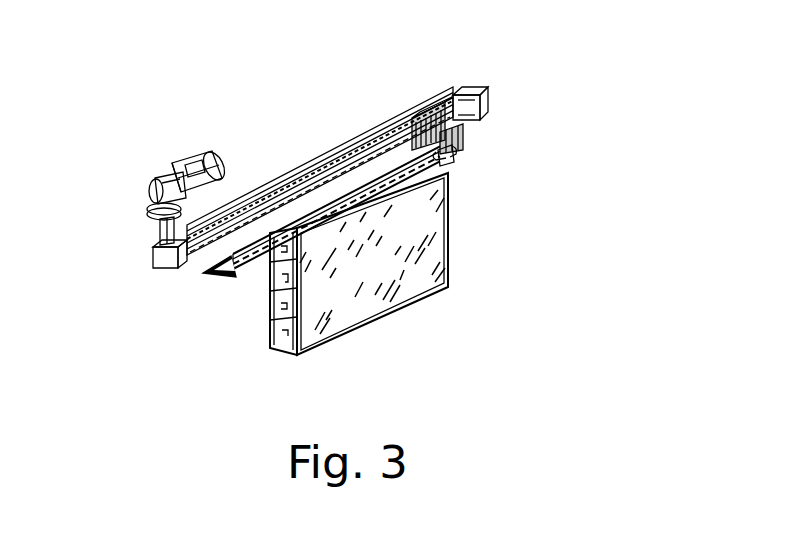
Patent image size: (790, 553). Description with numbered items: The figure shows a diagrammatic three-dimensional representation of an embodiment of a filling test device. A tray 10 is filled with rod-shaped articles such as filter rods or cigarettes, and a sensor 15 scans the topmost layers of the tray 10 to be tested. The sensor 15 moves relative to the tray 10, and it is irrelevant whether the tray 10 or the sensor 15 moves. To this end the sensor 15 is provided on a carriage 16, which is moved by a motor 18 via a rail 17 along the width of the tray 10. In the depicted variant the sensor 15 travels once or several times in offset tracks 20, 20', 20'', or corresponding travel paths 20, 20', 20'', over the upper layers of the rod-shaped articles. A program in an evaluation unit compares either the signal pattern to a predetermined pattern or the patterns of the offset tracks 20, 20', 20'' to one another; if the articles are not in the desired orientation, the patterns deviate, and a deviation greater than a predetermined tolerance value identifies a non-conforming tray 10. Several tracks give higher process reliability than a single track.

The tray 10 is at (450, 220).
The sensor 15 is at (470, 135).
The carriage 16 is at (428, 110).
The rail 17 is at (312, 167).
The motor 18 is at (187, 151).
The offset track 20 is at (393, 211).
The offset track 20' is at (511, 155).
The offset track 20'' is at (522, 122).